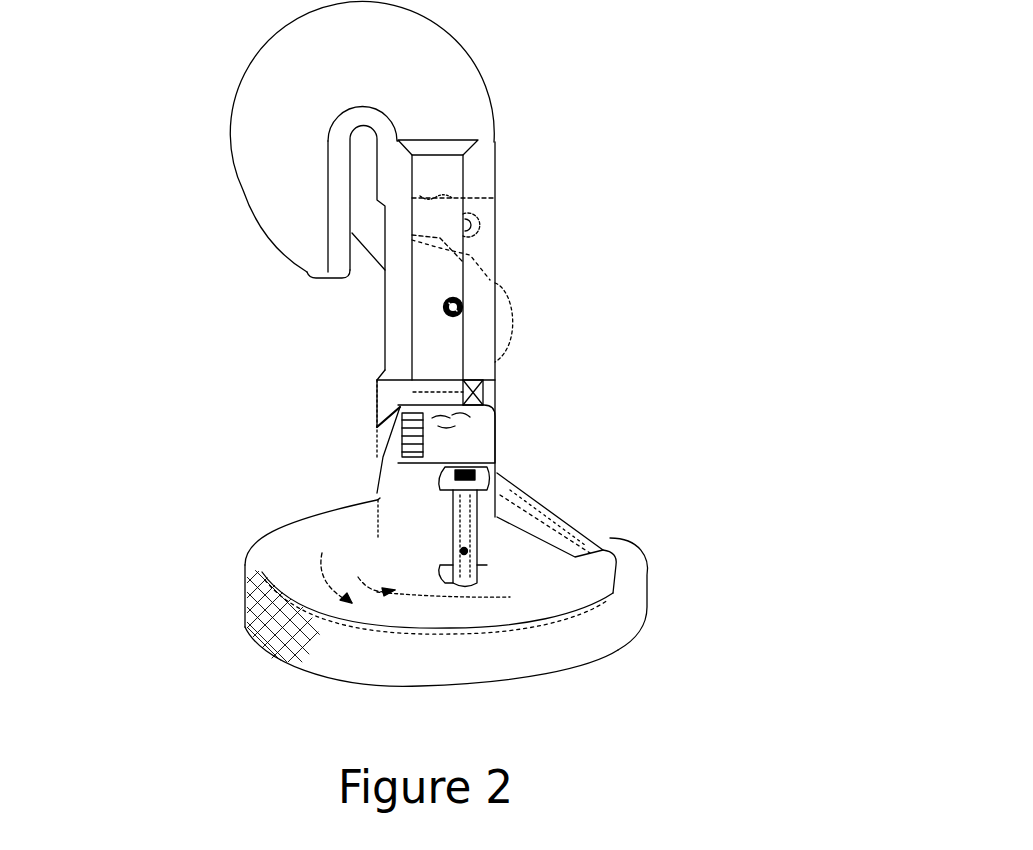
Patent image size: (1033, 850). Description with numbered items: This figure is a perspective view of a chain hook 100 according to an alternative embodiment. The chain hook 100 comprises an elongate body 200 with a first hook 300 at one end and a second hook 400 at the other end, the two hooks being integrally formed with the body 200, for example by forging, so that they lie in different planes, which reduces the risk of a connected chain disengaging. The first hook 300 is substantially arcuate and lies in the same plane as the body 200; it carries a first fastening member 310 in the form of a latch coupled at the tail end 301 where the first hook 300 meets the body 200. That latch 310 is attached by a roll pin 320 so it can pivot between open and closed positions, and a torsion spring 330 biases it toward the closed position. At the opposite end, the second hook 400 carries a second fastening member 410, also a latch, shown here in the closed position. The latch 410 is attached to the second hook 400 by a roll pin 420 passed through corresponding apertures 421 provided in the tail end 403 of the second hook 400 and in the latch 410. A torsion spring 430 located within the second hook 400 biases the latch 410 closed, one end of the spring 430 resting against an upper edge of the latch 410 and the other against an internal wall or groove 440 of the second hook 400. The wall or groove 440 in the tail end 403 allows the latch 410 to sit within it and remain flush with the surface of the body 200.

The chain hook 100 is at (632, 329).
The body 200 is at (483, 443).
The first hook 300 is at (618, 633).
The tail end 301 is at (403, 502).
The first fastening member 310 is at (542, 503).
The roll pin 320 is at (467, 480).
The torsion spring 330 is at (438, 540).
The second hook 400 is at (442, 65).
The tail end 403 is at (465, 370).
The second fastening member 410 is at (503, 310).
The roll pin 420 is at (460, 298).
The apertures 421 is at (466, 293).
The torsion spring 430 is at (448, 198).
The internal wall or groove 440 is at (400, 207).